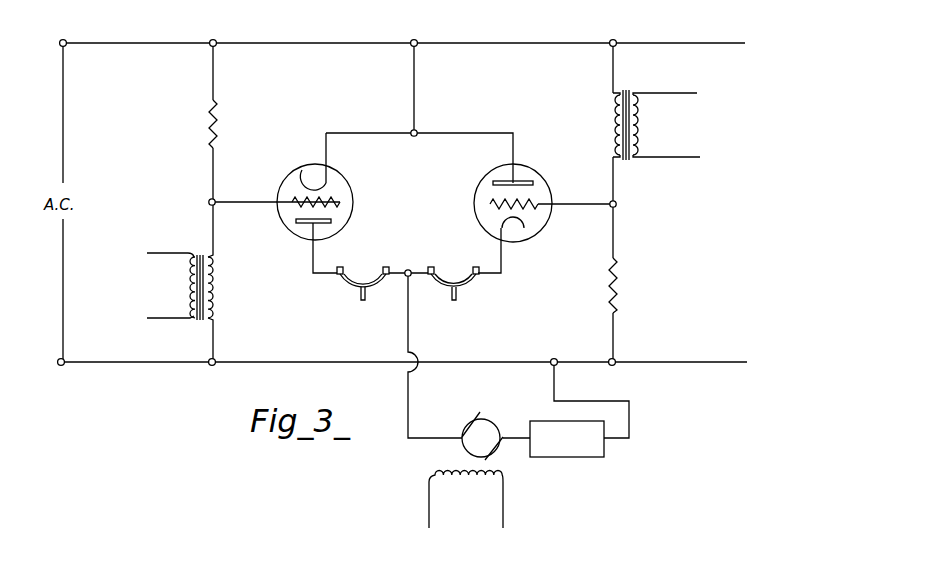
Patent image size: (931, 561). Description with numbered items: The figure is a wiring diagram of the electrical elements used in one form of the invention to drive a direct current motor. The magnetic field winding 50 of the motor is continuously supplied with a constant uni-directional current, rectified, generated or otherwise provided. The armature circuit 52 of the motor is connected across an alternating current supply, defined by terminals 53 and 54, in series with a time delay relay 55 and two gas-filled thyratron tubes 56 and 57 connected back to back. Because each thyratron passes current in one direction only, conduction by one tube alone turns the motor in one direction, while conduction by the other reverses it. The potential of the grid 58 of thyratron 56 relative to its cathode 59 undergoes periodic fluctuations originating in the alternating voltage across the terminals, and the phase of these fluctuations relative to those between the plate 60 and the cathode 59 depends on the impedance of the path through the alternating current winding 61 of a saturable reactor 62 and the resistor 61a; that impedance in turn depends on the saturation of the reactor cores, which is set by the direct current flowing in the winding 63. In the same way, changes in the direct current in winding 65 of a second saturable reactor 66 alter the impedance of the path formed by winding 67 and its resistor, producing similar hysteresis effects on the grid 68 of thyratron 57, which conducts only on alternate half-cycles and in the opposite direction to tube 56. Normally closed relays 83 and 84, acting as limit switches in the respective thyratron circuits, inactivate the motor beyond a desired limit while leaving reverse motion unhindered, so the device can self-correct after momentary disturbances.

The magnetic field winding 50 is at (466, 500).
The armature circuit 52 is at (482, 436).
The terminal 53 is at (66, 40).
The terminal 54 is at (64, 365).
The time delay relay 55 is at (567, 439).
The gas-filled thyratron tube 56 is at (343, 233).
The gas-filled thyratron tube 57 is at (483, 237).
The grid 58 is at (283, 182).
The cathode 59 is at (325, 172).
The plate 60 is at (297, 224).
The alternating current winding 61 is at (218, 293).
The resistor 61a is at (218, 120).
The saturable reactor 62 is at (197, 255).
The winding 63 is at (183, 288).
The winding 65 is at (645, 134).
The saturable reactor 66 is at (631, 93).
The winding 67 is at (610, 128).
The grid 68 is at (527, 212).
The normally closed relay 83 is at (363, 298).
The normally closed relay 84 is at (453, 298).